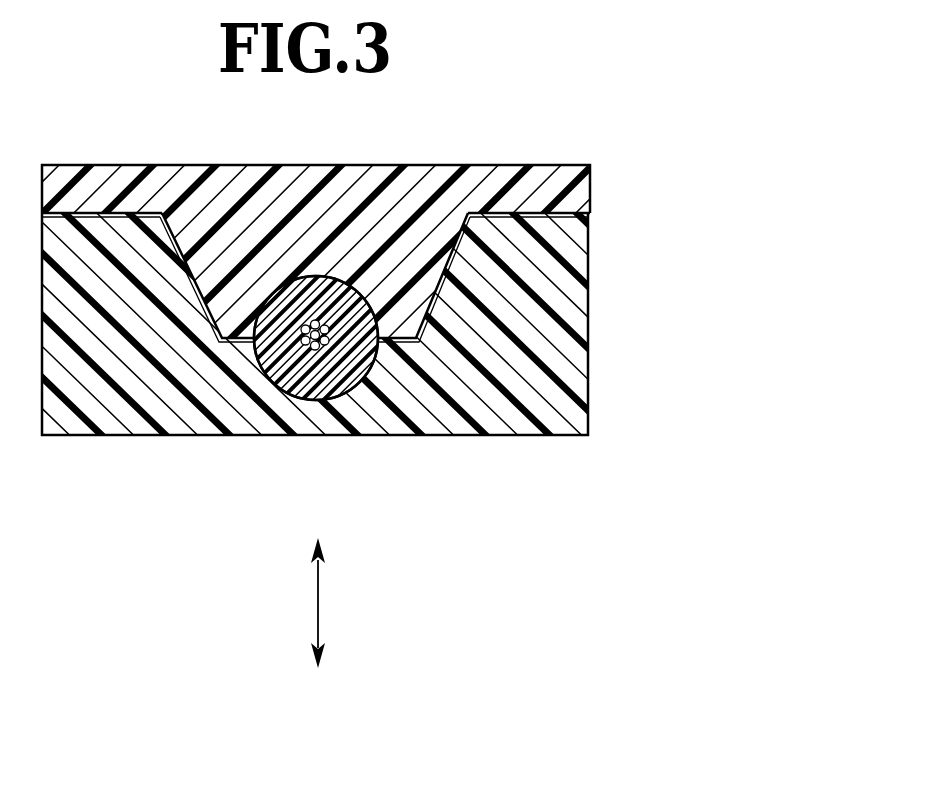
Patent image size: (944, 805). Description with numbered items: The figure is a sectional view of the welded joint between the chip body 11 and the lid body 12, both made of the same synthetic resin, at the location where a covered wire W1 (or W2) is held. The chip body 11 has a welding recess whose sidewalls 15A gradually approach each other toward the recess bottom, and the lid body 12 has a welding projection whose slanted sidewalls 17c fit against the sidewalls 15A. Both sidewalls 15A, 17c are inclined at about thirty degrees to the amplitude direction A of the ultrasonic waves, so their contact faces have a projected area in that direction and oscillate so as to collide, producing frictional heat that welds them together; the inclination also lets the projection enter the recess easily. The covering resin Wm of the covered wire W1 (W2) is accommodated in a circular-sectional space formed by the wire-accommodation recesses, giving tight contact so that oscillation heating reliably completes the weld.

The chip body 11 is at (625, 343).
The lid body 12 is at (625, 193).
The sidewalls 15A is at (457, 281).
The sidewalls 17c is at (465, 233).
The covered wire W1 is at (272, 398).
The covered wire W2 is at (316, 338).
The covering resin Wm is at (348, 372).
The amplitude direction A is at (318, 613).